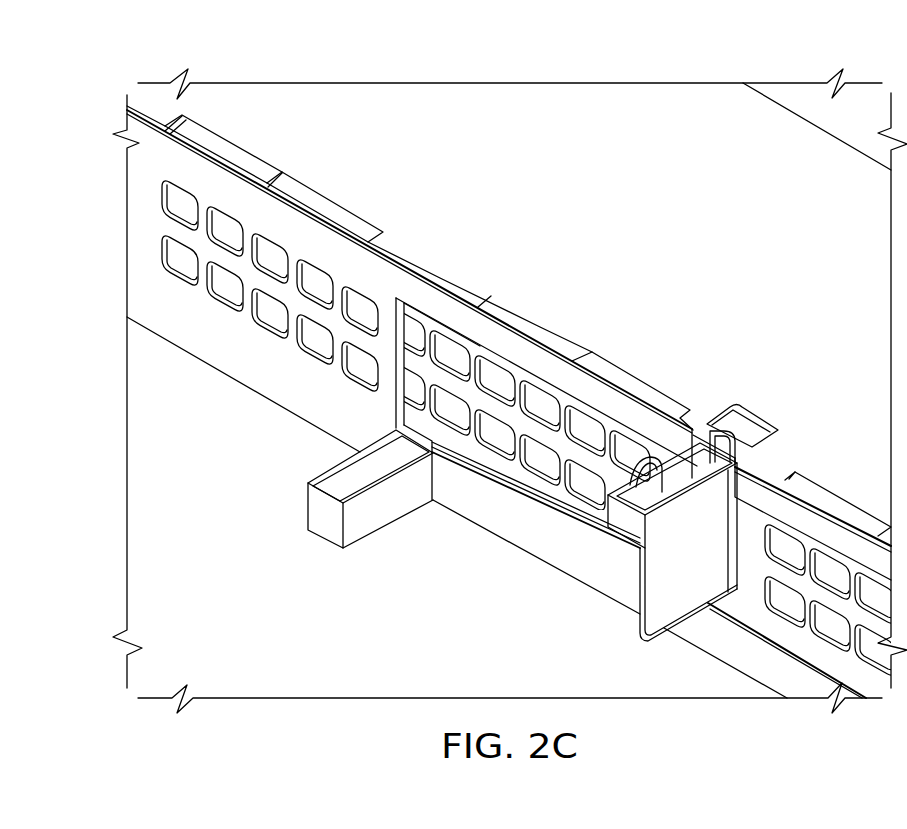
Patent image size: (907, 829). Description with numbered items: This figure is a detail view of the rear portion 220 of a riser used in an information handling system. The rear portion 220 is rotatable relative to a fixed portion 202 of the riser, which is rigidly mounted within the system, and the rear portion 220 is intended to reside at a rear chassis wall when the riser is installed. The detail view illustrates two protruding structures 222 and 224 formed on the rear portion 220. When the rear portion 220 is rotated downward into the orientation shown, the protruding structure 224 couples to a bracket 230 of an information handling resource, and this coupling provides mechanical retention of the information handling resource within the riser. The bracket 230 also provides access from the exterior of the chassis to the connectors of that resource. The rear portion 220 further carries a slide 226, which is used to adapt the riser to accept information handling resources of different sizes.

The fixed portion 202 is at (640, 98).
The rear portion 220 is at (258, 372).
The protruding structure 222 is at (308, 505).
The protruding structure 224 is at (690, 513).
The slide 226 is at (803, 645).
The bracket 230 is at (638, 620).